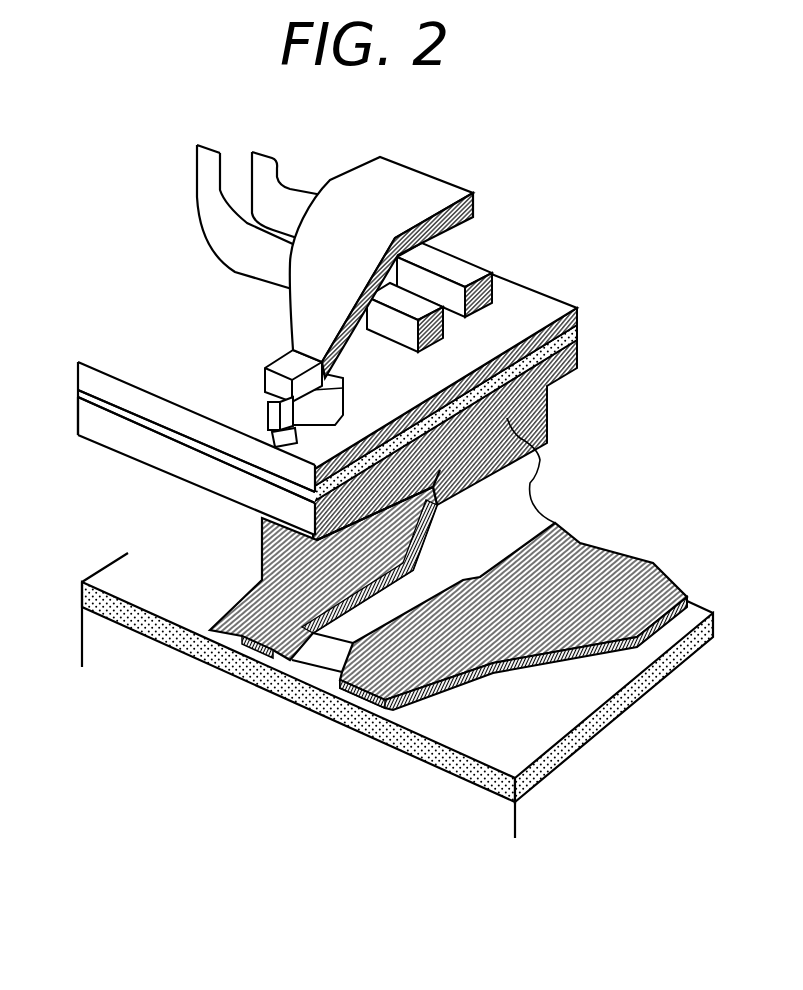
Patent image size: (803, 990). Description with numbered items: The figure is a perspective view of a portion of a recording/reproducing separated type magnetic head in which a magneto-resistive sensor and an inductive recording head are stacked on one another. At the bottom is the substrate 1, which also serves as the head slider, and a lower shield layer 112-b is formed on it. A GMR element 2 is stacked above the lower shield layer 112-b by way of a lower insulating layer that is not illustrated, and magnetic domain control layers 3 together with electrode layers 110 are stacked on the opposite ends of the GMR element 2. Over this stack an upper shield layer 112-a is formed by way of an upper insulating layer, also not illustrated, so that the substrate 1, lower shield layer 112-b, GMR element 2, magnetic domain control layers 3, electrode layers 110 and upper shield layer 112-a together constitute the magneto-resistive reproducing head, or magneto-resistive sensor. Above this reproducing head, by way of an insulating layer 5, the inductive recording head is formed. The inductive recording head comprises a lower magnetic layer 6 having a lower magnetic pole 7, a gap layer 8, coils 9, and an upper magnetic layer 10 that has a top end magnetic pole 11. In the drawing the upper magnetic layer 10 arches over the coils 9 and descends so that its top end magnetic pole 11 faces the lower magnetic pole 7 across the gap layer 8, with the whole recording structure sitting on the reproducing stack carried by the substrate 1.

The substrate 1 is at (413, 807).
The GMR element 2 is at (298, 670).
The magnetic domain control layers 3 is at (252, 662).
The insulating layer 5 is at (93, 400).
The lower magnetic layer 6 is at (137, 347).
The lower magnetic pole 7 is at (263, 433).
The gap layer 8 is at (293, 430).
The coils 9 is at (407, 298).
The upper magnetic layer 10 is at (420, 188).
The top end magnetic pole 11 is at (263, 400).
The electrode layers 110 is at (280, 573).
The upper shield layer 112-a is at (120, 440).
The lower shield layer 112-b is at (550, 770).